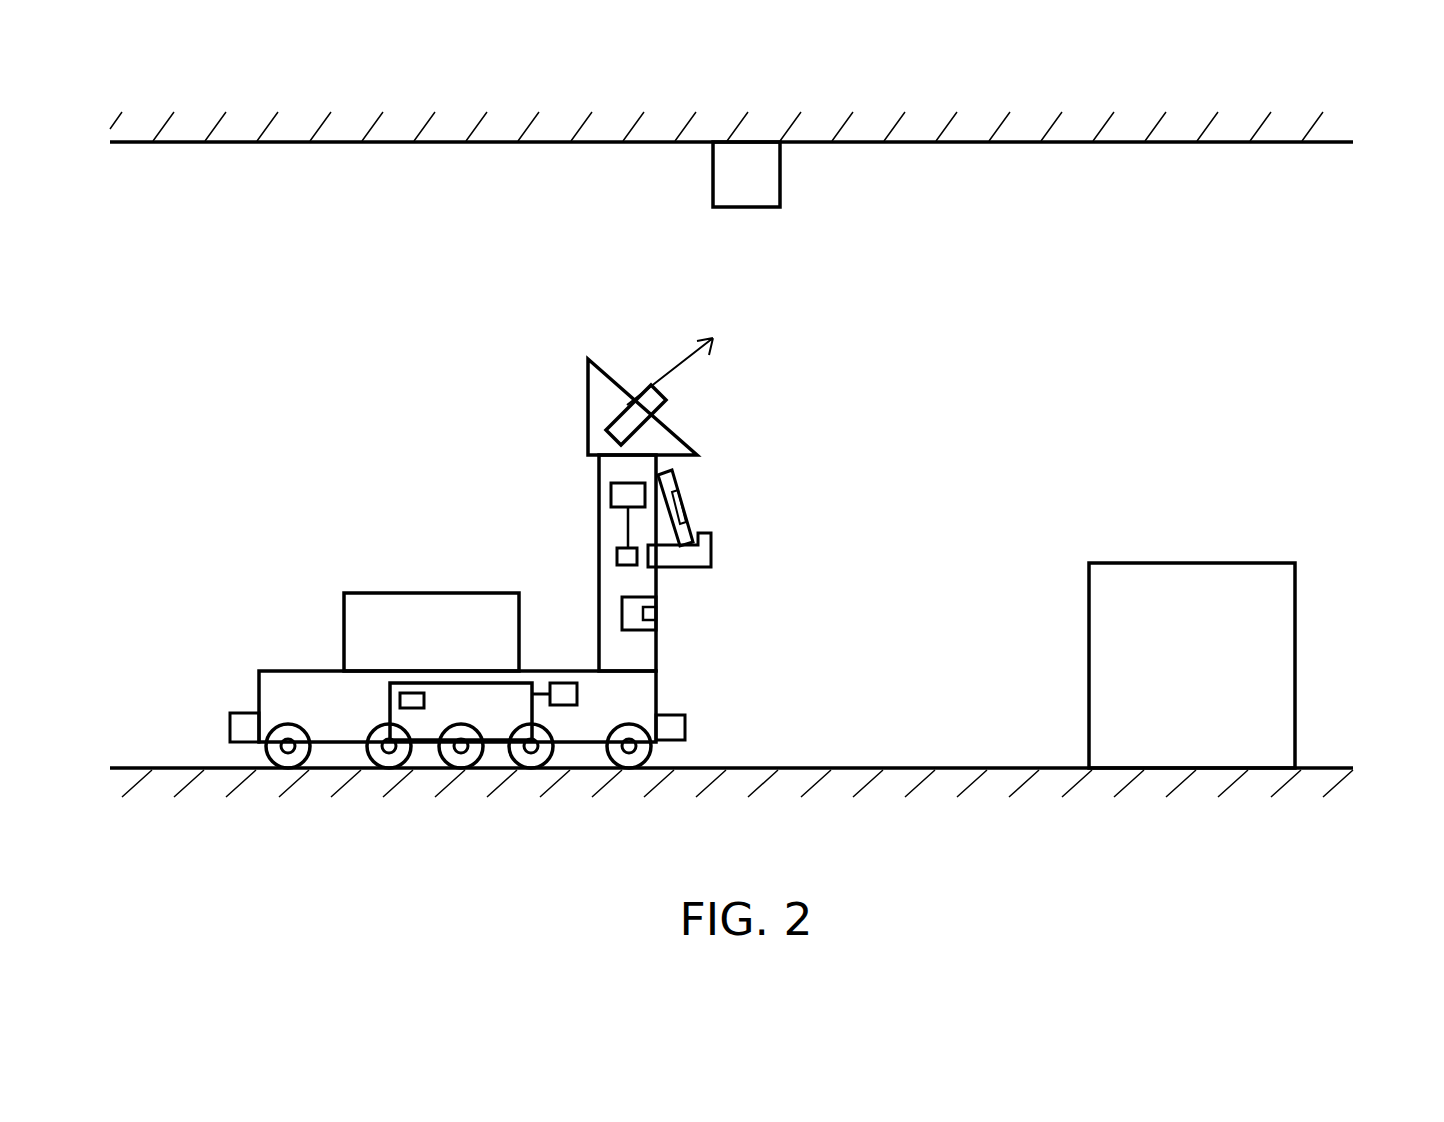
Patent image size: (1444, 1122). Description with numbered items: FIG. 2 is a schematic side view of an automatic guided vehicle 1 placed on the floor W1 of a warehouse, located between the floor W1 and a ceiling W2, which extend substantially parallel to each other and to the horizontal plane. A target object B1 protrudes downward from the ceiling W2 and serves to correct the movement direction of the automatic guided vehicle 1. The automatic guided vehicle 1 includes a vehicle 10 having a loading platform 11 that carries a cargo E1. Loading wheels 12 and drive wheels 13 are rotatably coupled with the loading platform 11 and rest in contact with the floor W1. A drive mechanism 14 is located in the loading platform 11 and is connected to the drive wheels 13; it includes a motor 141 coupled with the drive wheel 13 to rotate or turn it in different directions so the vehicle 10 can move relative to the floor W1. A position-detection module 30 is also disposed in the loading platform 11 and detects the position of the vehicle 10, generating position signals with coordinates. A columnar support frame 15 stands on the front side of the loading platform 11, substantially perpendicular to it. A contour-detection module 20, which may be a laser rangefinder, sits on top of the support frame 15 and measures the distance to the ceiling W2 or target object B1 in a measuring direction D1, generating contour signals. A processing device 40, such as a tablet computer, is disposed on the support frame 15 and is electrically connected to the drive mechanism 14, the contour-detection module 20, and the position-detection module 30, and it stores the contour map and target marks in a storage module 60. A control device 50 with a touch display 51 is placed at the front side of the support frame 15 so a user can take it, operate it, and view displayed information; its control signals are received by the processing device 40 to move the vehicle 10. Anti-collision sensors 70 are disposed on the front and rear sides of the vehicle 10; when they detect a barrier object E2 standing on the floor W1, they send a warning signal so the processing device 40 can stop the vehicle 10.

The automatic guided vehicle 1 is at (310, 421).
The vehicle 10 is at (242, 622).
The loading platform 11 is at (300, 690).
The loading wheels 12 is at (290, 757).
The drive wheels 13 is at (462, 758).
The drive mechanism 14 is at (497, 722).
The motor 141 is at (410, 708).
The support frame 15 is at (605, 527).
The contour-detection module 20 is at (641, 373).
The position-detection module 30 is at (559, 683).
The processing device 40 is at (612, 492).
The control device 50 is at (690, 469).
The display 51 is at (686, 508).
The storage module 60 is at (617, 556).
The anti-collision sensors 70 is at (248, 727).
The floor W1 is at (1315, 784).
The ceiling W2 is at (1305, 126).
The target object B1 is at (760, 176).
The cargo E1 is at (434, 618).
The barrier object E2 is at (1191, 583).
The measuring direction D1 is at (675, 371).